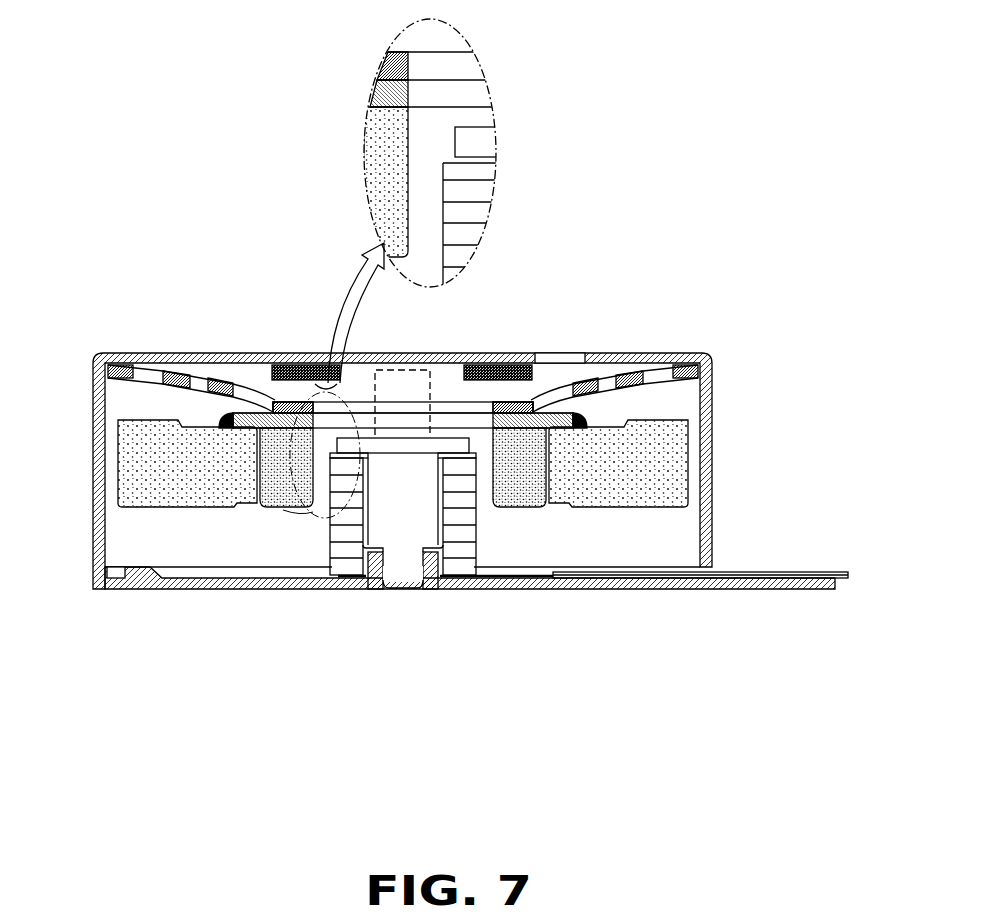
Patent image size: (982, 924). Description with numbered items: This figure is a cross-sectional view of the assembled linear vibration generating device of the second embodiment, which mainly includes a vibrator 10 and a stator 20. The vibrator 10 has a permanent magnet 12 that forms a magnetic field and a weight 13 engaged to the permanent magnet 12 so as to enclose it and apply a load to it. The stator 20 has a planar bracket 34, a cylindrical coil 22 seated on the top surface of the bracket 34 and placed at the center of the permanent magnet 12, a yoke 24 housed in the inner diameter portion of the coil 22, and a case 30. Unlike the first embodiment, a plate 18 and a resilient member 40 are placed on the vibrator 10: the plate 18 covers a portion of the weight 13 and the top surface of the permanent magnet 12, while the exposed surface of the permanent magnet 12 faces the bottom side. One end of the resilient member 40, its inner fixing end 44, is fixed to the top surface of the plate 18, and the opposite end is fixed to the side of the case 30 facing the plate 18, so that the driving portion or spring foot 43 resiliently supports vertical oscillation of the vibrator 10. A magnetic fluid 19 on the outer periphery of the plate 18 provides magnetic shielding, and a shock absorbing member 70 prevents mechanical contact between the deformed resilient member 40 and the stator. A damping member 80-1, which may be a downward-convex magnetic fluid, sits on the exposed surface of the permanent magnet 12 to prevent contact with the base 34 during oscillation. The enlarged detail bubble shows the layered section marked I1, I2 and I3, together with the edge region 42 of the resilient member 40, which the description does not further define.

The vibrator 10 is at (403, 551).
The permanent magnet 12 is at (262, 507).
The weight 13 is at (180, 500).
The plate 18 is at (247, 420).
The magnetic fluid 19 is at (223, 423).
The stator 20 is at (476, 572).
The coil 22 is at (410, 549).
The yoke 24 is at (407, 528).
The case 30 is at (700, 532).
The bracket 34 is at (533, 586).
The resilient member 40 is at (391, 325).
The edge portion 42 is at (115, 365).
The spring foot 43 is at (190, 373).
The inner fixing end 44 is at (380, 349).
The shock absorbing member 70 is at (310, 372).
The damping member 80-1 is at (285, 515).
The first layer I1 is at (425, 198).
The second layer I2 is at (407, 107).
The third layer I3 is at (402, 70).